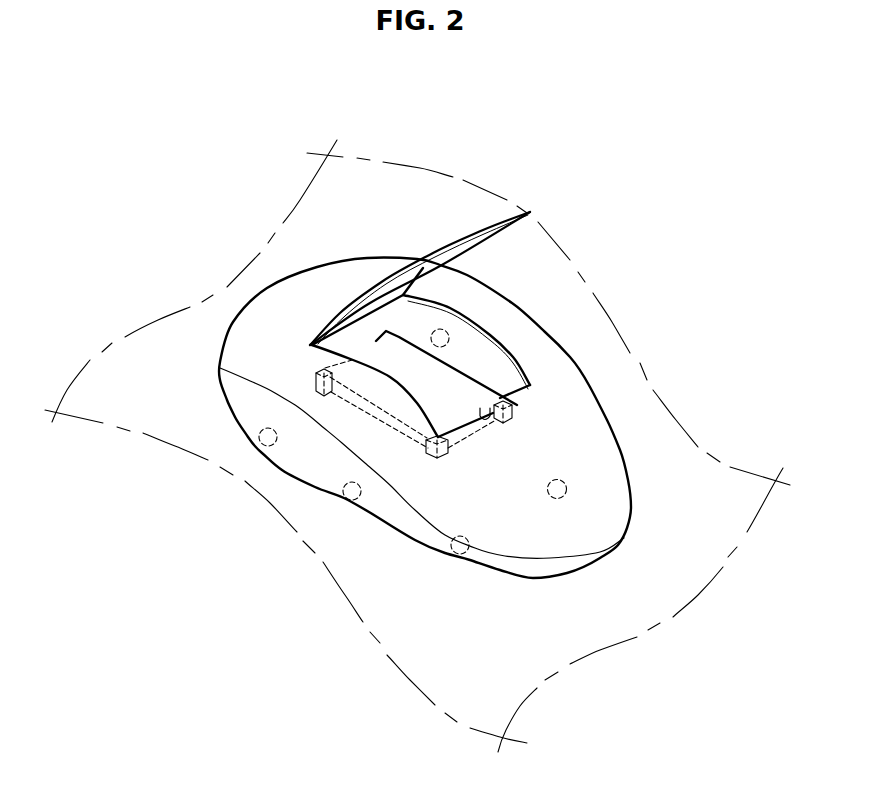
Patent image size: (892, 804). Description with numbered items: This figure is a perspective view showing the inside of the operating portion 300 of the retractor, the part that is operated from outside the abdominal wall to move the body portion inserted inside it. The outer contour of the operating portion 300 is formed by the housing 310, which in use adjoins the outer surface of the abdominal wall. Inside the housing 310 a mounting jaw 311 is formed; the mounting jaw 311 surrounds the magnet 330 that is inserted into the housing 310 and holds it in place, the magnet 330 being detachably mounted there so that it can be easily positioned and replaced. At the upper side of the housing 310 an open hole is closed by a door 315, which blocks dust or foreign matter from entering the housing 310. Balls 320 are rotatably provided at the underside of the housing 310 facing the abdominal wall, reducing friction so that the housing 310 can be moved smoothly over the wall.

The operating portion 300 is at (588, 371).
The housing 310 is at (342, 282).
The mounting jaw 311 is at (397, 340).
The door 315 is at (462, 243).
The balls 320 is at (270, 440).
The magnet 330 is at (452, 387).